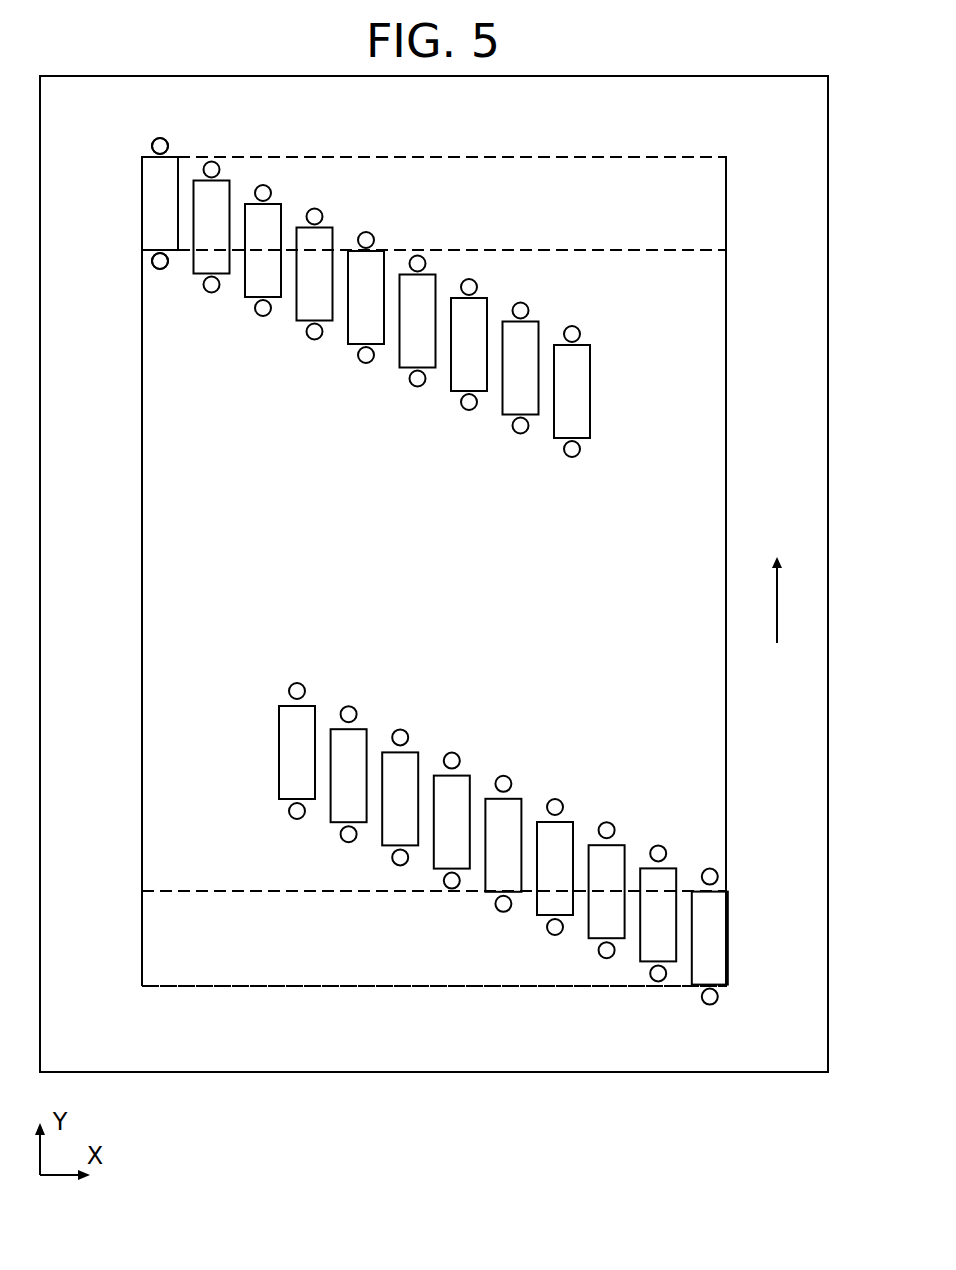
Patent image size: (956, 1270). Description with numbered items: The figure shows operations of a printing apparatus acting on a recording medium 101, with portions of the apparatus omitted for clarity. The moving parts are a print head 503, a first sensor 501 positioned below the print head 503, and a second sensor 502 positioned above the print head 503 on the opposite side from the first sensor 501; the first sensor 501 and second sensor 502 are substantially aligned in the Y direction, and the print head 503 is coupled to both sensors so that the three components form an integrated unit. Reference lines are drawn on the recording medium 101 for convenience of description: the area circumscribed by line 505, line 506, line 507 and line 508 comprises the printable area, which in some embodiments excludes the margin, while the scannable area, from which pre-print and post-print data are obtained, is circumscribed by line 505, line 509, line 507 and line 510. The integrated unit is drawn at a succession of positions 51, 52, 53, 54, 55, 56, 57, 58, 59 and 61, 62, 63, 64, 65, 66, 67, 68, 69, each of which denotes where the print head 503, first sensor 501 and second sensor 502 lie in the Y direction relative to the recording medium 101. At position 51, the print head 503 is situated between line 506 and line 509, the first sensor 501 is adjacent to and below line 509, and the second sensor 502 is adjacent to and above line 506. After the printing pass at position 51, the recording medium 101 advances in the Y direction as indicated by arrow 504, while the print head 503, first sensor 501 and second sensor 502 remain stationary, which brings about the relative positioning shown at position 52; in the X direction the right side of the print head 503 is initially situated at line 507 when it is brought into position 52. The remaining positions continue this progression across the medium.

The recording medium 101 is at (540, 1062).
The first sensor 501 is at (158, 270).
The second sensor 502 is at (153, 146).
The print head 503 is at (155, 215).
The arrow 504 is at (780, 608).
The line 505 is at (145, 447).
The line 506 is at (602, 157).
The line 507 is at (726, 318).
The line 508 is at (290, 985).
The line 509 is at (562, 250).
The line 510 is at (175, 891).
The position 51 is at (162, 286).
The position 52 is at (214, 310).
The position 53 is at (265, 333).
The position 54 is at (316, 356).
The position 55 is at (368, 380).
The position 56 is at (420, 404).
The position 57 is at (471, 427).
The position 58 is at (522, 450).
The position 59 is at (574, 474).
The position 61 is at (301, 660).
The position 62 is at (353, 684).
The position 63 is at (404, 708).
The position 64 is at (456, 733).
The position 65 is at (507, 757).
The position 66 is at (559, 781).
The position 67 is at (611, 805).
The position 68 is at (662, 829).
The position 69 is at (714, 854).